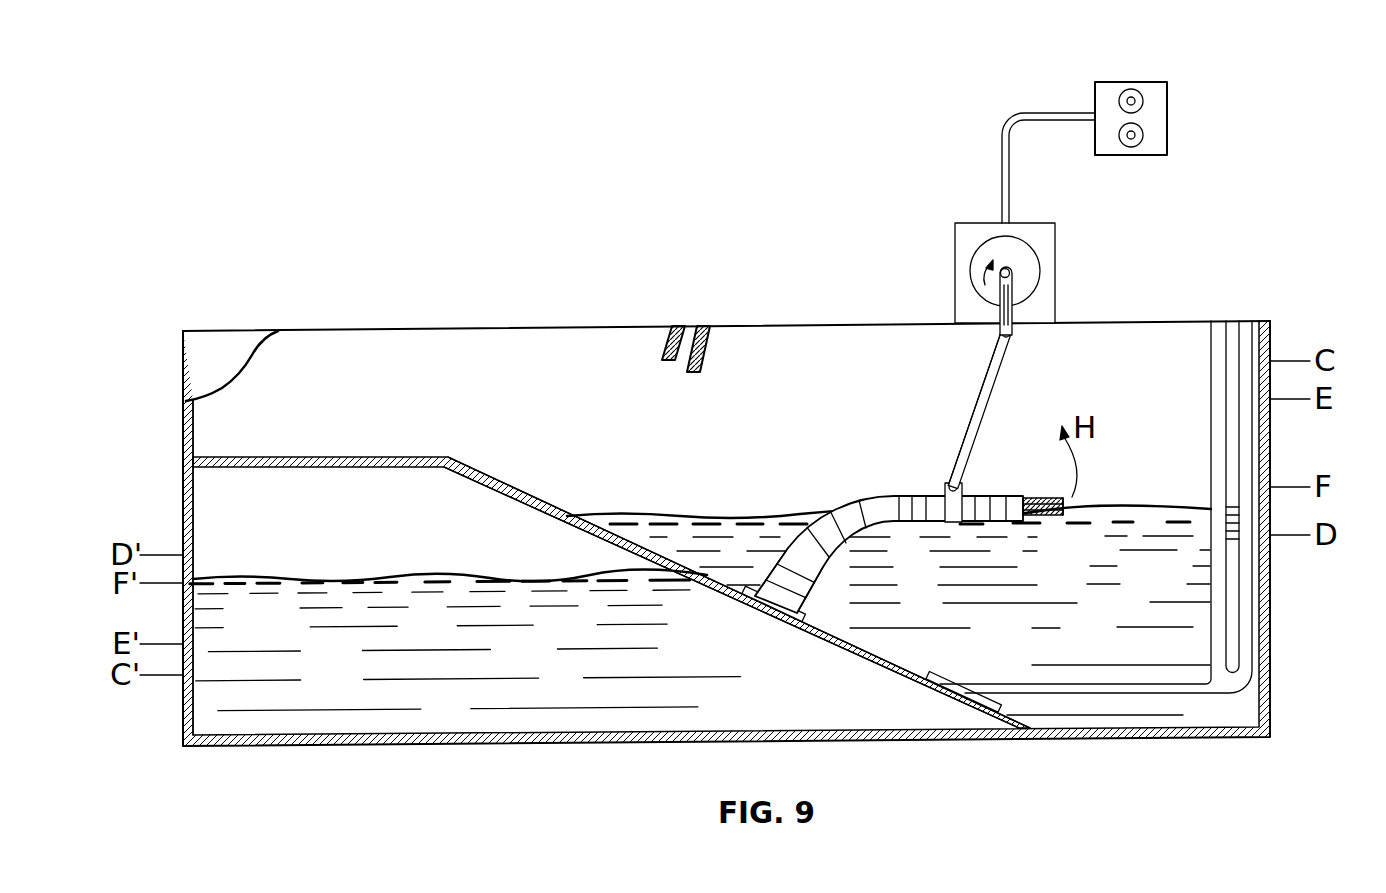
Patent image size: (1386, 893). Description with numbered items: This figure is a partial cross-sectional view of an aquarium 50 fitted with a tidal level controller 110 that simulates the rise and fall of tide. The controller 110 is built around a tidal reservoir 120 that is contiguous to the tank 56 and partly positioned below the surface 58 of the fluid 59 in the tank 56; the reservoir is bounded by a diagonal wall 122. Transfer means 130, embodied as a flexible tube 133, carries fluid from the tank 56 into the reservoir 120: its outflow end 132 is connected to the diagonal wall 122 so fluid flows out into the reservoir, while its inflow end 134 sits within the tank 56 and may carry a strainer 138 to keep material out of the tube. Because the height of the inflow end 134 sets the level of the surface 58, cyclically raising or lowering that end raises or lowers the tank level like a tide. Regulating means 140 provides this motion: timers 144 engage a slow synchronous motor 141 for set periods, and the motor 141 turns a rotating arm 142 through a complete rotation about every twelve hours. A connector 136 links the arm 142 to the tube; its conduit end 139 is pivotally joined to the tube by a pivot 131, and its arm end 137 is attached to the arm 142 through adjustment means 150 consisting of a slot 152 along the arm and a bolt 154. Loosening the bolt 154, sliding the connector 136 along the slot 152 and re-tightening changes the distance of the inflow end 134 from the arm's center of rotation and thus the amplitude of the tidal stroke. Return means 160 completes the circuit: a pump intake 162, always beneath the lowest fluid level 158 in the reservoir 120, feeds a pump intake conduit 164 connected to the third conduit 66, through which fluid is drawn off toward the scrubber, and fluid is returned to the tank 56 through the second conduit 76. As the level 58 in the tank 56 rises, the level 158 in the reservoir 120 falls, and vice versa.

The aquarium 50 is at (178, 356).
The tank 56 is at (183, 436).
The fluid surface 58 is at (656, 514).
The fluid 59 is at (943, 632).
The third conduit 66 is at (1210, 425).
The second conduit 76 is at (668, 342).
The tidal level controller 110 is at (992, 224).
The tidal reservoir 120 is at (403, 450).
The diagonal wall 122 is at (486, 478).
The transfer means 130 is at (882, 485).
The pivot 131 is at (962, 486).
The outflow end 132 is at (765, 617).
The flexible tube 133 is at (800, 530).
The inflow end 134 is at (1065, 506).
The connector 136 is at (985, 430).
The arm end 137 is at (985, 368).
The strainer 138 is at (1048, 518).
The conduit end 139 is at (950, 480).
The regulating means 140 is at (1043, 220).
The slow synchronous motor 141 is at (1062, 258).
The rotating arm 142 is at (1015, 308).
The timers 144 is at (1158, 96).
The adjustment means 150 is at (988, 300).
The slot 152 is at (995, 315).
The bolt 154 is at (1011, 338).
The fluid level in reservoir 158 is at (290, 580).
The return means 160 is at (1000, 672).
The pump intake 162 is at (950, 692).
The pump intake conduit 164 is at (1094, 664).